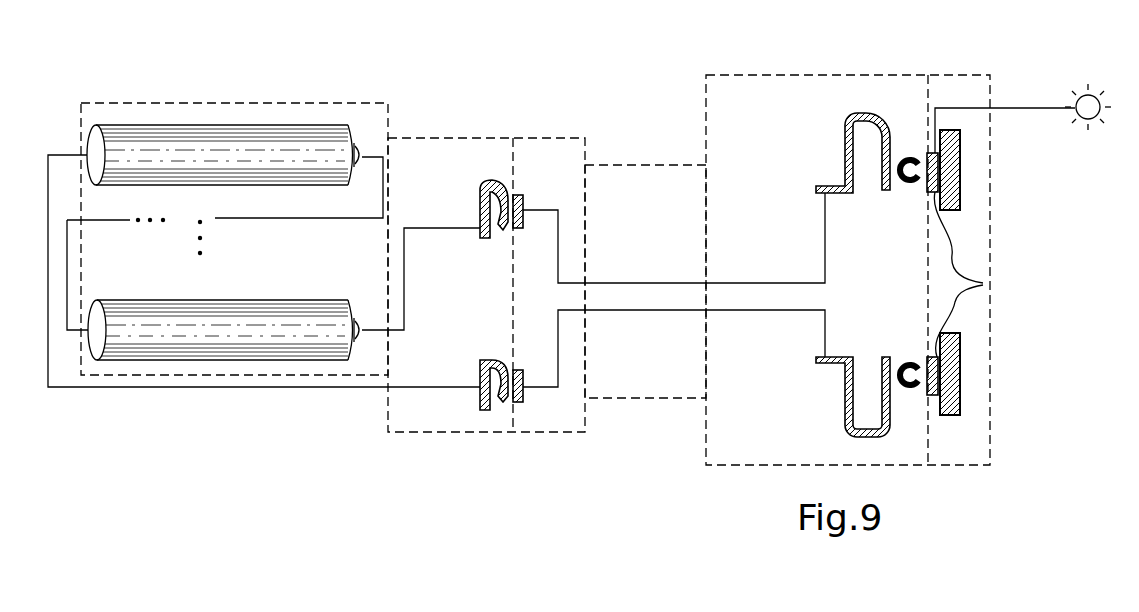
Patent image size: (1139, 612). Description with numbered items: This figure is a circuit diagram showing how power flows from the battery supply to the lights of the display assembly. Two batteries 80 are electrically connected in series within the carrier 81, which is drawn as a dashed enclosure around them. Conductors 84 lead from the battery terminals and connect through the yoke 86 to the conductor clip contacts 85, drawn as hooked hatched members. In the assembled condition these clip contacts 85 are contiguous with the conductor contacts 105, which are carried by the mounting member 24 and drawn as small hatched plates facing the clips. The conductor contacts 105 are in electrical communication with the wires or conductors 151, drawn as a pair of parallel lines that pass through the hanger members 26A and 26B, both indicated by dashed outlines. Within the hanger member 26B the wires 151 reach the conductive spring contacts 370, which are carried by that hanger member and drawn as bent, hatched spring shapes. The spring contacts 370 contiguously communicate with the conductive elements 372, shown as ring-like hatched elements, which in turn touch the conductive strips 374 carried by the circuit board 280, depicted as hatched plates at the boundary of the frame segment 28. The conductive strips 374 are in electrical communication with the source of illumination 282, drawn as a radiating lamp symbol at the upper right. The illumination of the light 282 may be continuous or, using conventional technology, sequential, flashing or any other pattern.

The carrier 81 is at (258, 103).
The batteries 80 is at (293, 175).
The conductors 84 is at (430, 228).
The yoke 86 is at (468, 138).
The conductor clip contacts 85 is at (483, 185).
The conductor contacts 105 is at (522, 195).
The mounting member 24 is at (590, 152).
The wires or conductors 151 is at (618, 283).
The hanger member 26A is at (628, 402).
The hanger member 26B is at (738, 73).
The frame segment 28 is at (945, 470).
The conductive spring contacts 370 is at (845, 150).
The conductive elements 372 is at (912, 157).
The circuit board 280 is at (960, 177).
The conductive strips 374 is at (975, 274).
The sources of illumination 282 is at (1085, 119).